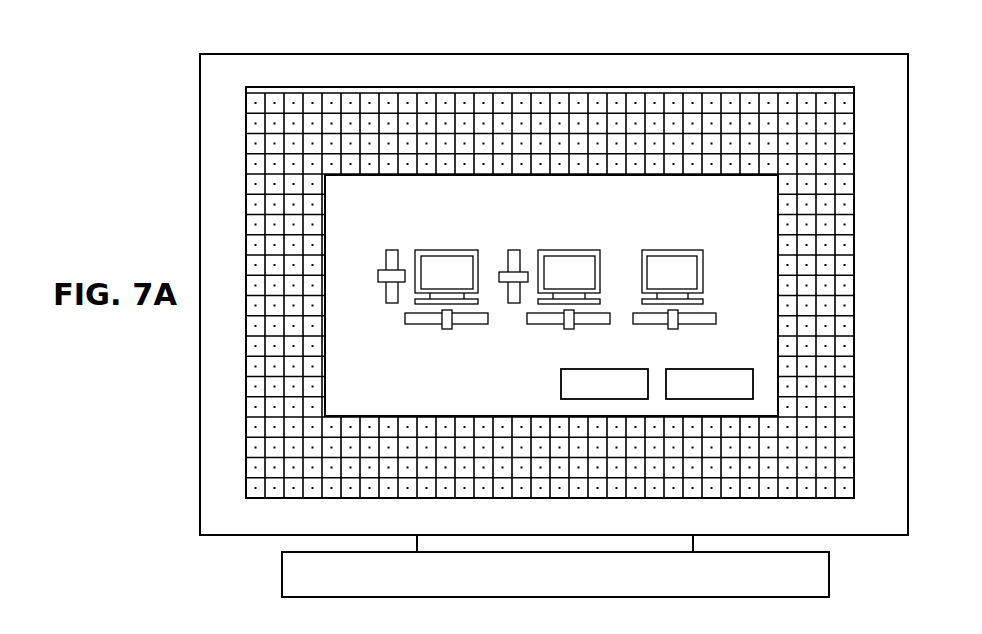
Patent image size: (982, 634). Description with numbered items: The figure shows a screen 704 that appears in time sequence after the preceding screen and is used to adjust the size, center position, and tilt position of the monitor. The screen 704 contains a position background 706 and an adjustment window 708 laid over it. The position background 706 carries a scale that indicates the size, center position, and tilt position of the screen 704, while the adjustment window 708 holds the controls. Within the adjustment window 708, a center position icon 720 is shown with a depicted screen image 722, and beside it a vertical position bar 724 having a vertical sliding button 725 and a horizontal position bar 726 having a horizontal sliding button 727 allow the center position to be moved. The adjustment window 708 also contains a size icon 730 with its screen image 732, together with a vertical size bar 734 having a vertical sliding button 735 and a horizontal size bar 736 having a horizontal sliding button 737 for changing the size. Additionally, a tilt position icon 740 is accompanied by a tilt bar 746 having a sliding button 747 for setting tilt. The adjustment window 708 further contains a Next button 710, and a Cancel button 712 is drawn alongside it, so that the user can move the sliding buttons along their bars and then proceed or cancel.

The screen 704 is at (610, 53).
The position background 706 is at (427, 123).
The adjustment window 708 is at (712, 168).
The Next button 710 is at (560, 378).
The Cancel button 712 is at (702, 368).
The center position icon 720 is at (425, 250).
The first display icon screen image 722 is at (457, 266).
The vertical position bar 724 is at (390, 250).
The vertical sliding button 725 is at (378, 280).
The horizontal position bar 726 is at (405, 318).
The horizontal sliding button 727 is at (447, 329).
The size icon 730 is at (572, 249).
The second display icon screen image 732 is at (582, 268).
The vertical size bar 734 is at (514, 250).
The vertical sliding button 735 is at (502, 283).
The horizontal size bar 736 is at (538, 325).
The horizontal sliding button 737 is at (569, 330).
The tilt position icon 740 is at (675, 248).
The tilt bar 746 is at (713, 313).
The sliding button 747 is at (673, 330).